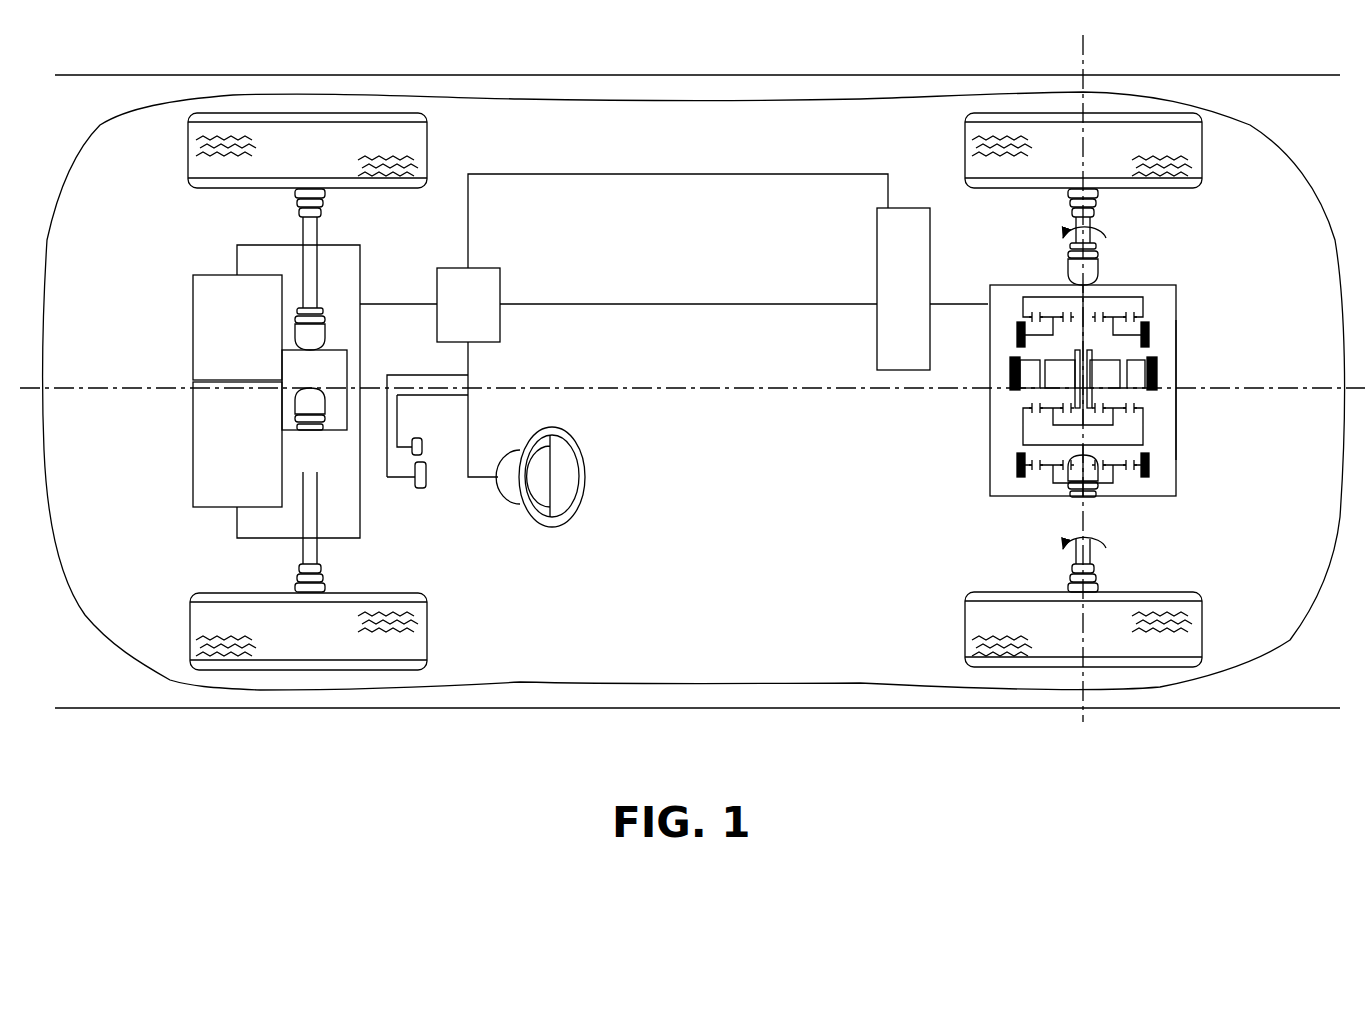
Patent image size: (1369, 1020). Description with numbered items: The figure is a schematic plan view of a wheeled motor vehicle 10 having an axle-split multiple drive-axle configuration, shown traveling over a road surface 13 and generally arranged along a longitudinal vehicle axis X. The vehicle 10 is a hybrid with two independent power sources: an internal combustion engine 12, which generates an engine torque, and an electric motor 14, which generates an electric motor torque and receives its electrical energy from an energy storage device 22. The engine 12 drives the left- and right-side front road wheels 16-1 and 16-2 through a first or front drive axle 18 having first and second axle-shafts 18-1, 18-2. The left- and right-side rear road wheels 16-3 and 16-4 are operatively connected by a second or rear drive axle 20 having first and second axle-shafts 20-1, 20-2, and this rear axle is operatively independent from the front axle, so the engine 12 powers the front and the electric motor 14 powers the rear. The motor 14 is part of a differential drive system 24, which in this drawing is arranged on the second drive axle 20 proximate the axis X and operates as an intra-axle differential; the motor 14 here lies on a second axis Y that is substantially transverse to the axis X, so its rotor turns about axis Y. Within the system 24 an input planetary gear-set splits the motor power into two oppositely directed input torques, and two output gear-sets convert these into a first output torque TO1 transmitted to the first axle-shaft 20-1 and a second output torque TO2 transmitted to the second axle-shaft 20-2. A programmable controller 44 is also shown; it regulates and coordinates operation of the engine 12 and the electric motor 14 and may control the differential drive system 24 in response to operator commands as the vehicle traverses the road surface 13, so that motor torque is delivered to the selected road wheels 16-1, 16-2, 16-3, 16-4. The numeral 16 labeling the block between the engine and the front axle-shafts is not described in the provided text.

The motor vehicle 10 is at (646, 693).
The internal combustion engine 12 is at (226, 446).
The road surface 13 is at (79, 122).
The electric motor 14 is at (1162, 372).
The transmission 16 is at (226, 318).
The left-side front road wheel 16-1 is at (285, 642).
The right-side front road wheel 16-2 is at (283, 160).
The left-side rear road wheel 16-3 is at (1091, 650).
The right-side rear road wheel 16-4 is at (1096, 150).
The first drive axle 18 is at (373, 502).
The first axle-shaft 18-1 is at (318, 553).
The second axle-shaft 18-2 is at (318, 228).
The second drive axle 20 is at (1149, 381).
The first axle-shaft 20-1 is at (1062, 552).
The second axle-shaft 20-2 is at (1062, 226).
The energy storage device 22 is at (891, 315).
The differential drive system 24 is at (1184, 435).
The programmable controller 44 is at (482, 315).
The first output torque TO1 is at (1098, 552).
The second output torque TO2 is at (1098, 236).
The longitudinal vehicle axis X is at (1322, 393).
The second axis Y is at (1083, 722).